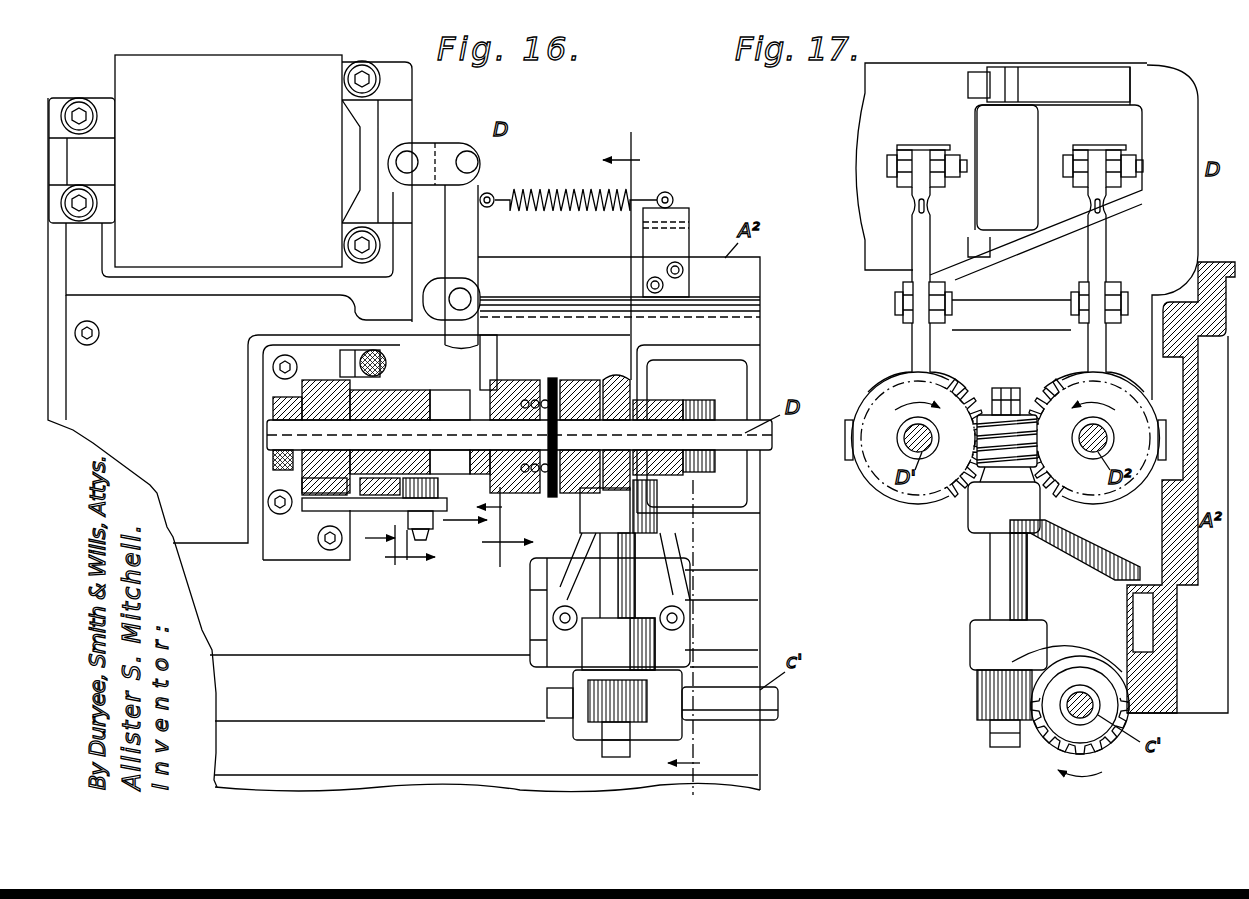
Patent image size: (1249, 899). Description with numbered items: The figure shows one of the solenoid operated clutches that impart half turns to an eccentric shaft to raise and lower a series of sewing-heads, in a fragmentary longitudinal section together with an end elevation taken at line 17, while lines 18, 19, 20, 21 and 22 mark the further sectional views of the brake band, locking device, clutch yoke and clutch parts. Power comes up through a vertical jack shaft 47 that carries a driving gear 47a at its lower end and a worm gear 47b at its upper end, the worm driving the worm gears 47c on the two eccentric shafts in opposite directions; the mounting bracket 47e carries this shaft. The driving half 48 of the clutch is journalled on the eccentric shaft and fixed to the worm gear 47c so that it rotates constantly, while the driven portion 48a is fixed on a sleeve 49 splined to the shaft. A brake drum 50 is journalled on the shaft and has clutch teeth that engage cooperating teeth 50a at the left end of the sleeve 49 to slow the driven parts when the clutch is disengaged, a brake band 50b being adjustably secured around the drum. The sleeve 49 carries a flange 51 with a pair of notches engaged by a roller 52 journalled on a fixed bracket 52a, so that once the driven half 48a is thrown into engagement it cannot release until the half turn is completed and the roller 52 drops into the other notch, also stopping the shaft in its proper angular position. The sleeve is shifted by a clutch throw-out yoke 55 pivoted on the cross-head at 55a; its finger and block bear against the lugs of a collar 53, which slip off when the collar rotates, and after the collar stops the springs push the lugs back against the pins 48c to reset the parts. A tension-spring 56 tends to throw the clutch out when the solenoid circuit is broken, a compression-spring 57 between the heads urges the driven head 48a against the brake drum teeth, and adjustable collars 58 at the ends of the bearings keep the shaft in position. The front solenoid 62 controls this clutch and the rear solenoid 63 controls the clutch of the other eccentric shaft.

In FIG. 16, the section line of Fig. 17 is at (666, 463).
In FIG. 16, the section line of Fig. 18 is at (379, 538).
In FIG. 16, the section line of Fig. 19 is at (406, 553).
In FIG. 16, the section line of Fig. 20 is at (471, 527).
In FIG. 16, the section line of Fig. 21 is at (501, 517).
In FIG. 16, the section line of Fig. 22 is at (507, 549).
In FIG. 16, the vertical jack shaft 47 is at (622, 585).
In FIG. 17, the vertical jack shaft 47 is at (1000, 547).
In FIG. 16, the driving gear 47a is at (595, 712).
In FIG. 17, the driving gear 47a is at (990, 692).
In FIG. 17, the worm gear 47b is at (995, 412).
In FIG. 16, the worm gear 47c is at (625, 395).
In FIG. 17, the worm gear 47c is at (878, 458).
In FIG. 17, the bracket for worm shaft 47e is at (1122, 556).
In FIG. 16, the driving half of the clutch 48 is at (575, 383).
In FIG. 16, the driven portion of the clutch 48a is at (515, 390).
In FIG. 16, the pins 48c is at (525, 380).
In FIG. 16, the sleeve 49 is at (480, 465).
In FIG. 16, the brake drum 50 is at (395, 385).
In FIG. 16, the teeth 50a is at (372, 350).
In FIG. 16, the brake band 50b is at (380, 487).
In FIG. 16, the flange 51 is at (425, 395).
In FIG. 16, the roller 52 is at (423, 487).
In FIG. 16, the fixed bracket 52a is at (388, 540).
In FIG. 16, the collar 53 is at (493, 378).
In FIG. 16, the clutch throw-out yoke 55 is at (478, 235).
In FIG. 17, the clutch throw-out yoke 55 is at (918, 232).
In FIG. 16, the pivot of the clutch throw-out yoke 55a is at (470, 297).
In FIG. 17, the pivot of the clutch throw-out yoke 55a is at (953, 306).
In FIG. 16, the tension-spring 56 is at (538, 192).
In FIG. 16, the compression-spring 57 is at (551, 497).
In FIG. 16, the adjustable collars 58 is at (275, 405).
In FIG. 16, the front solenoid 62 is at (258, 65).
In FIG. 17, the front solenoid 62 is at (875, 103).
In FIG. 17, the rear solenoid 63 is at (1122, 132).